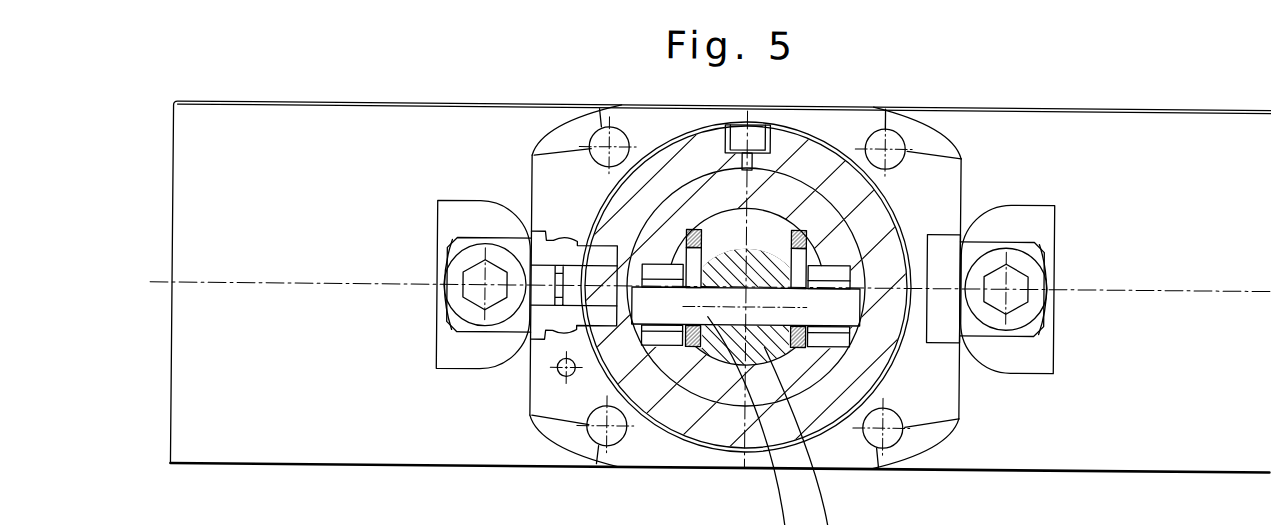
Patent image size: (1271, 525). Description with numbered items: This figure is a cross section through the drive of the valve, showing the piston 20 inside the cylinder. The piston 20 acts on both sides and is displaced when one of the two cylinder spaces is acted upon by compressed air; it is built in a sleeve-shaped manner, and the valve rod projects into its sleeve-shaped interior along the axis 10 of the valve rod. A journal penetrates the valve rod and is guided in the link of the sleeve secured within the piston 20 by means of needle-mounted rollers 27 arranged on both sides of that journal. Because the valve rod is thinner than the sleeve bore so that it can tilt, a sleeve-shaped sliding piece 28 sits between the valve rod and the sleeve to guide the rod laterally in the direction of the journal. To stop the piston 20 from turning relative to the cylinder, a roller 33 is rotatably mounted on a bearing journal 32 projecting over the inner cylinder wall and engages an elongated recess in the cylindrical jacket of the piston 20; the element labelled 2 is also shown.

The bearing body 2 is at (742, 388).
The axis of the valve rod 10 is at (720, 313).
The piston 20 is at (676, 423).
The needle-mounted rollers 27 is at (823, 343).
The sleeve-shaped sliding piece 28 is at (690, 345).
The bearing journal 32 is at (582, 283).
The roller 33 is at (602, 258).